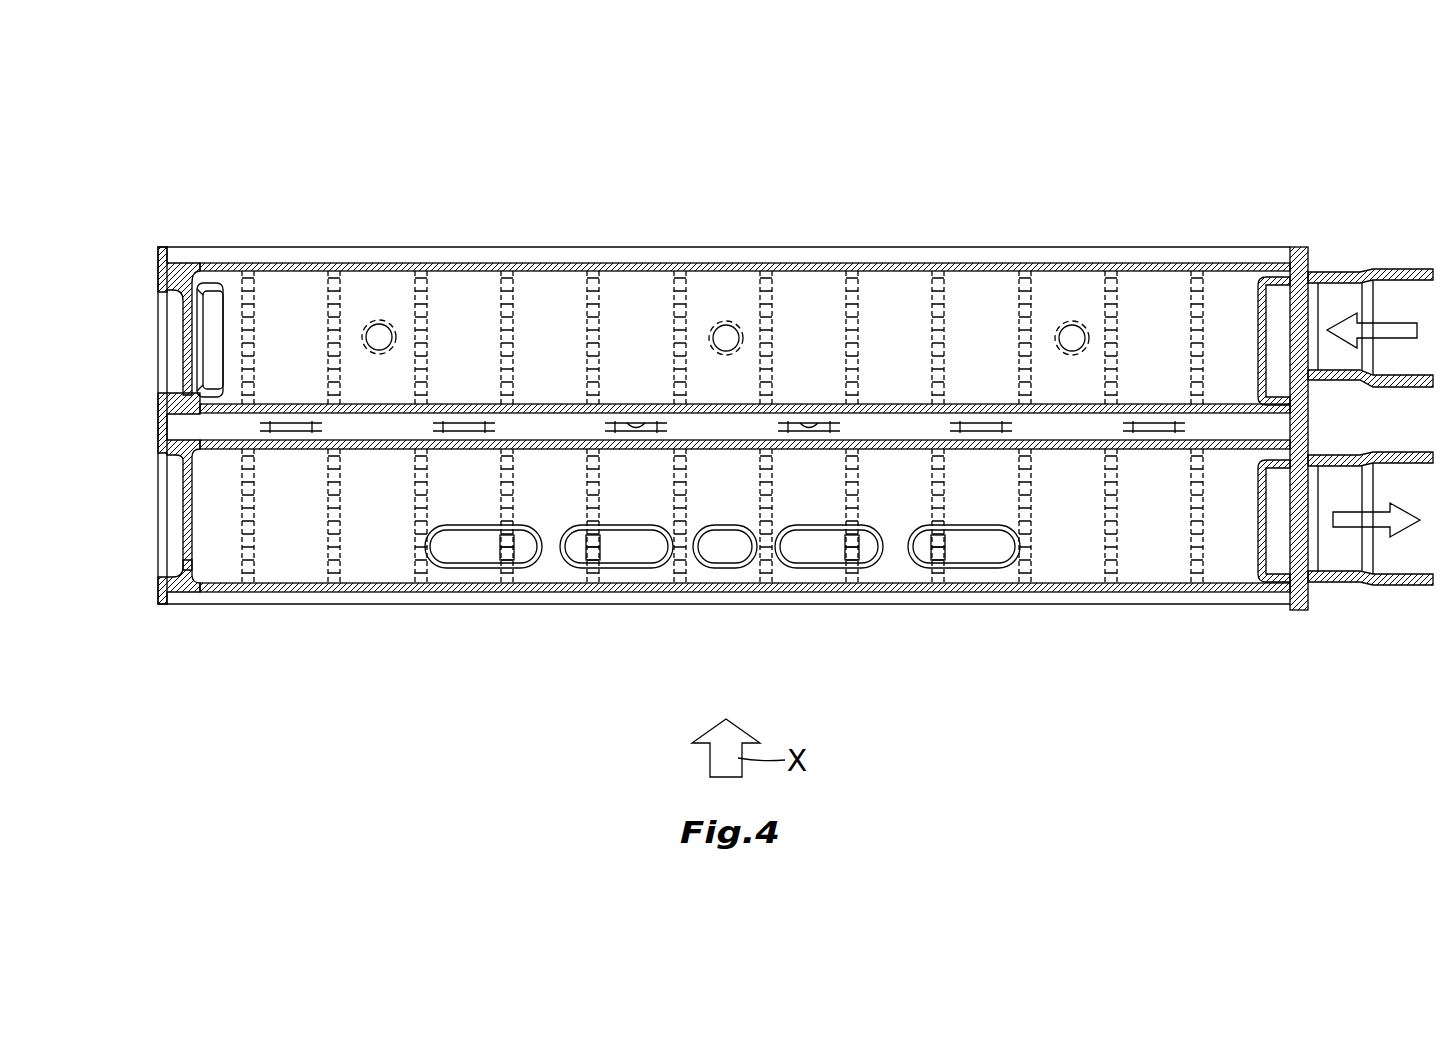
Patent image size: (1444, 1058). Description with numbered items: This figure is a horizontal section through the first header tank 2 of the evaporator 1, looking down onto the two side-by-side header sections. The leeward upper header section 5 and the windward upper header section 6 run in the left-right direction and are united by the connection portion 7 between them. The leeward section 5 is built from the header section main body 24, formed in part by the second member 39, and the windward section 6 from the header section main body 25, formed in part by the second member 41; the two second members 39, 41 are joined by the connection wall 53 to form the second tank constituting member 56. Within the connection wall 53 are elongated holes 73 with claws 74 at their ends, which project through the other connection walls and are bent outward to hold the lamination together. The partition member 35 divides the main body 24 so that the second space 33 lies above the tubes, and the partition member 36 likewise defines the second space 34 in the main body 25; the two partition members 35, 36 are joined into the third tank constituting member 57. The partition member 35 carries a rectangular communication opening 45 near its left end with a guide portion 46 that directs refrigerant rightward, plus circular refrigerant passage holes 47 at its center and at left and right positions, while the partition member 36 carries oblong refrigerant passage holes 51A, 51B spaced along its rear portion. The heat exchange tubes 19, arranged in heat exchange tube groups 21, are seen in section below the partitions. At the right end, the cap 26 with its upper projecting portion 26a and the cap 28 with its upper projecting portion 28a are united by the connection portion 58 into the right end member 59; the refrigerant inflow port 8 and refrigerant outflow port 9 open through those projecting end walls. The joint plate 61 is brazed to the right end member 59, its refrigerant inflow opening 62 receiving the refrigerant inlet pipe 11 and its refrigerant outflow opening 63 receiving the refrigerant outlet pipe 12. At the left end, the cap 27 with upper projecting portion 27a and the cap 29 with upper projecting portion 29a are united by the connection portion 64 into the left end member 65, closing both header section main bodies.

The evaporator 1 is at (1152, 143).
The first header tank 2 is at (755, 201).
The leeward upper header section 5 is at (700, 263).
The windward upper header section 6 is at (995, 592).
The connection portion 7 is at (551, 450).
The refrigerant inflow port 8 is at (1247, 288).
The refrigerant outflow port 9 is at (1263, 575).
The refrigerant inlet pipe 11 is at (1395, 270).
The refrigerant outlet pipe 12 is at (1380, 586).
The heat exchange tube 19 is at (680, 330).
The heat exchange tube group 21 is at (232, 362).
The header section main body 24 is at (462, 263).
The header section main body 25 is at (448, 592).
The cap 26 is at (1288, 255).
The upper projecting portion 26a is at (1250, 292).
The cap 27 is at (159, 268).
The upper projecting portion 27a is at (186, 286).
The cap 28 is at (1291, 606).
The upper projecting portion 28a is at (1256, 550).
The cap 29 is at (160, 588).
The upper projecting portion 29a is at (198, 562).
The second space 33 is at (800, 285).
The second space 34 is at (1068, 567).
The partition member 35 is at (547, 300).
The partition member 36 is at (375, 540).
The second member 39 is at (944, 263).
The second member 41 is at (893, 592).
The communication opening 45 is at (238, 283).
The guide portion 46 is at (218, 322).
The refrigerant passage hole 47 is at (379, 322).
The refrigerant passage hole 51A is at (722, 556).
The refrigerant passage hole 51B is at (580, 556).
The connection wall 53 is at (906, 404).
The second tank constituting member 56 is at (865, 263).
The third tank constituting member 57 is at (896, 300).
The connection portion 58 is at (1304, 430).
The right end member 59 is at (1292, 612).
The joint plate 61 is at (1299, 250).
The refrigerant inflow opening 62 is at (1338, 272).
The refrigerant outflow opening 63 is at (1332, 586).
The connection portion 64 is at (158, 425).
The left end member 65 is at (166, 247).
The elongated hole 73 is at (638, 422).
The claw 74 is at (485, 422).